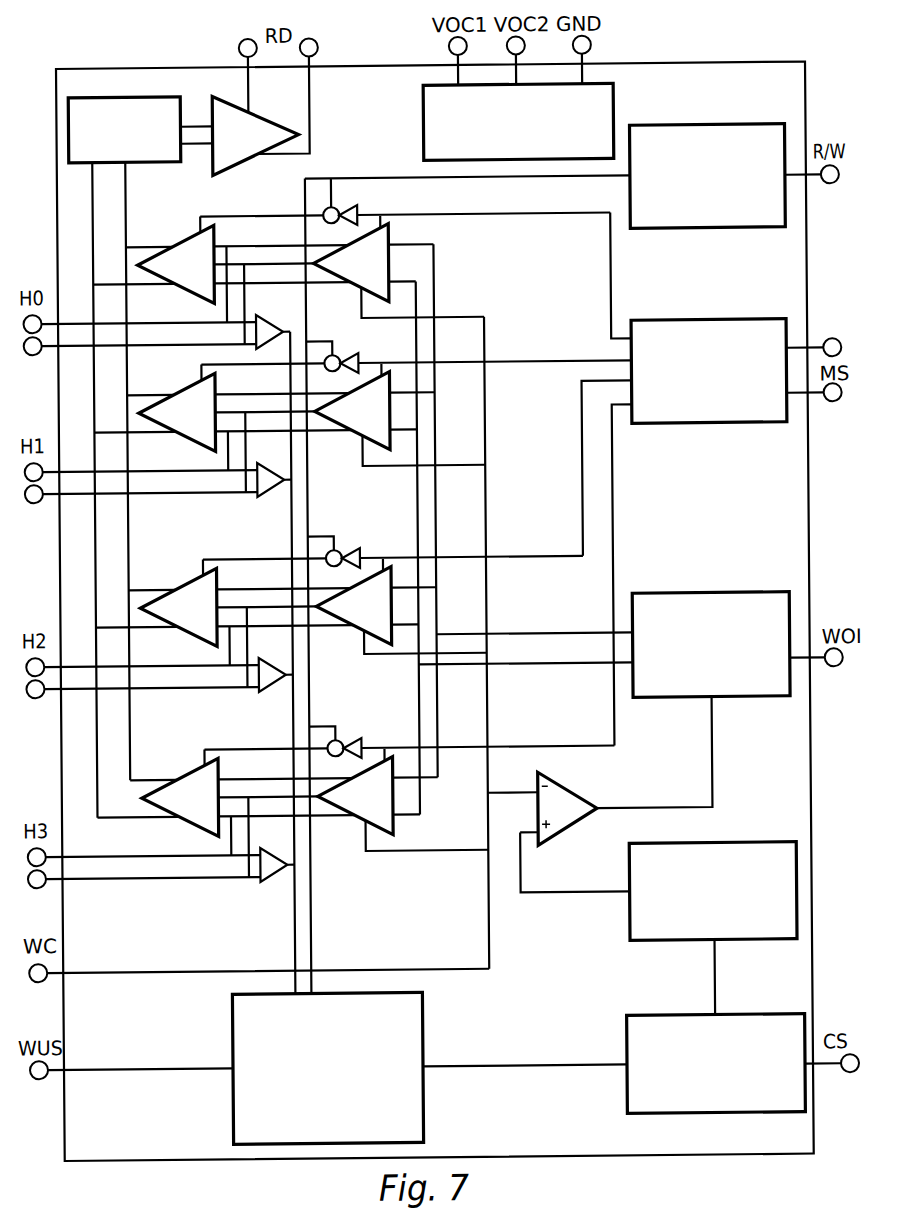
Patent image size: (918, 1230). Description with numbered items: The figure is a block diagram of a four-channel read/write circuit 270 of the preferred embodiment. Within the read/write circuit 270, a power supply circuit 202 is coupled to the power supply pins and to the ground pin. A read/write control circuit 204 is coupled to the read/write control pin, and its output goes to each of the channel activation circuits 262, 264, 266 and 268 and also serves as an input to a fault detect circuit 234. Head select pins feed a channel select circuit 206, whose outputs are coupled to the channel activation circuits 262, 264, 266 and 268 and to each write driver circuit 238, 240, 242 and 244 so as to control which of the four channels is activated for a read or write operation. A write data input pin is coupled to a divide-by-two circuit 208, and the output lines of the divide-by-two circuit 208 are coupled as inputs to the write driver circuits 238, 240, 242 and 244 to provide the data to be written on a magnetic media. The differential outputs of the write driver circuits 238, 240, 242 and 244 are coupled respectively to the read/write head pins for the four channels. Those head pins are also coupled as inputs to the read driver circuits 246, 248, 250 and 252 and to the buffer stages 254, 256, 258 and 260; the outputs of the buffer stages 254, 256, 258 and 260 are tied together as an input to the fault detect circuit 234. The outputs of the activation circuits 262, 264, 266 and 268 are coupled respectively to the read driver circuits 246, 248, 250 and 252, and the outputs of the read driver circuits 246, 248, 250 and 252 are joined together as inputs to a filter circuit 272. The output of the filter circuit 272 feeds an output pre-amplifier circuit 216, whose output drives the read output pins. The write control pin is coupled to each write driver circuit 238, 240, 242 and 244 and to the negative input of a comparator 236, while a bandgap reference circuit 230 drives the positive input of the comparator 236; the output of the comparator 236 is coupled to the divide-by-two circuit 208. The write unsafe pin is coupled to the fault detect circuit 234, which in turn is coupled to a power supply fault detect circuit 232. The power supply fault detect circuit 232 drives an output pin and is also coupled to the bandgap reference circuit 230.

The power supply circuit 202 is at (602, 152).
The read/write control circuit 204 is at (775, 223).
The channel select circuit 206 is at (777, 421).
The divide-by-two circuit 208 is at (775, 693).
The output pre-amplifier circuit 216 is at (210, 108).
The bandgap reference circuit 230 is at (783, 931).
The power supply fault detect circuit 232 is at (784, 1110).
The fault detect circuit 234 is at (400, 1136).
The comparator 236 is at (568, 809).
The write driver circuit 238 is at (351, 263).
The write driver circuit 240 is at (352, 411).
The write driver circuit 242 is at (354, 606).
The write driver circuit 244 is at (356, 796).
The read driver circuit 246 is at (175, 264).
The read driver circuit 248 is at (176, 412).
The read driver circuit 250 is at (178, 607).
The read driver circuit 252 is at (180, 797).
The buffer stage 254 is at (271, 318).
The buffer stage 256 is at (271, 466).
The buffer stage 258 is at (271, 661).
The buffer stage 260 is at (271, 851).
The channel activation circuit 262 is at (350, 209).
The channel activation circuit 264 is at (350, 357).
The channel activation circuit 266 is at (350, 552).
The channel activation circuit 268 is at (350, 742).
The read/write circuit 270 is at (692, 60).
The filter circuit 272 is at (172, 160).